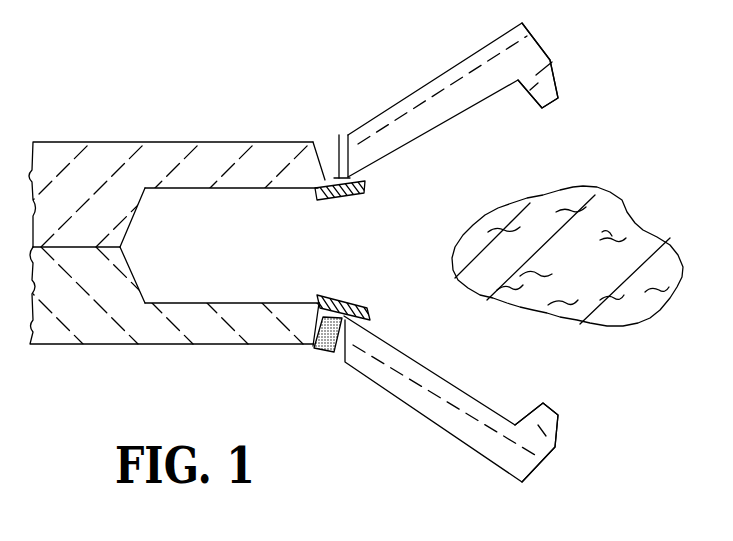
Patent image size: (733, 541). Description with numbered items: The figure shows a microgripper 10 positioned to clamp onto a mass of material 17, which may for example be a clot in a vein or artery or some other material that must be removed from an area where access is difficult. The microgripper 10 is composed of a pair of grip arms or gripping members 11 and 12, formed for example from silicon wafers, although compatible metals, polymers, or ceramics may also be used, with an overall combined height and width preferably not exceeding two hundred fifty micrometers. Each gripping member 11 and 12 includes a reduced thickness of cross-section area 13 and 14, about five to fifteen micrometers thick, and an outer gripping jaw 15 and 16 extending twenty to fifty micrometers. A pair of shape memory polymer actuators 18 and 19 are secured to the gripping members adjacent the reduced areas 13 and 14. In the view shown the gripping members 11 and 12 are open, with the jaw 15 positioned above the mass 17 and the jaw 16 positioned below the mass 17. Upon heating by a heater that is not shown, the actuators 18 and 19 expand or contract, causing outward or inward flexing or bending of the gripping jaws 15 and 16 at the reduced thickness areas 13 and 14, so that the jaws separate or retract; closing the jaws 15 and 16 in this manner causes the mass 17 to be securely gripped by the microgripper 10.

The microgripper 10 is at (166, 111).
The gripping member 11 is at (220, 142).
The gripping member 12 is at (185, 344).
The reduced thickness area 13 is at (339, 135).
The reduced thickness area 14 is at (326, 348).
The gripping jaw 15 is at (556, 105).
The gripping jaw 16 is at (558, 404).
The mass of material 17 is at (567, 256).
The SMP actuator 18 is at (325, 201).
The SMP actuator 19 is at (345, 297).